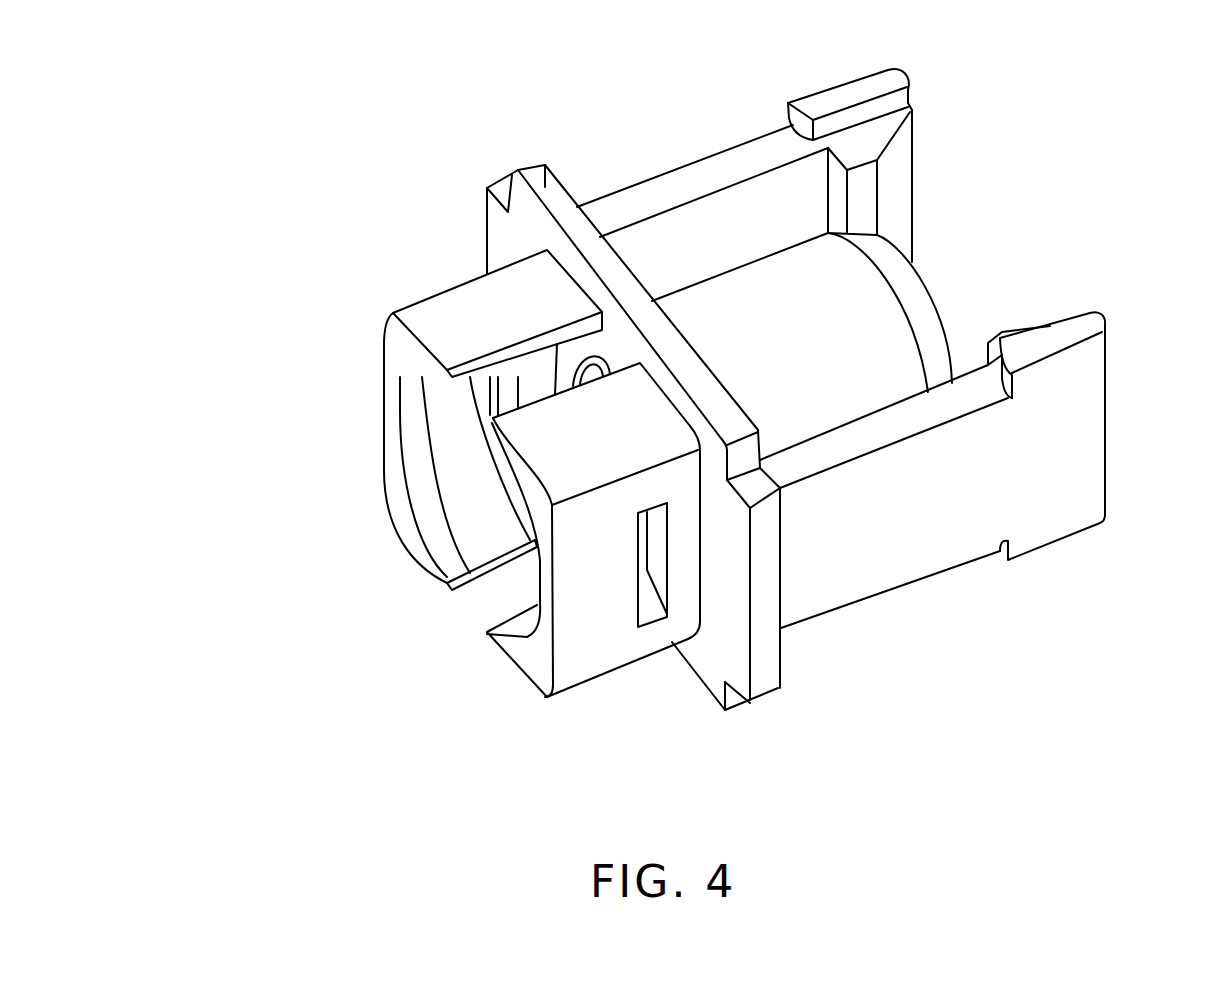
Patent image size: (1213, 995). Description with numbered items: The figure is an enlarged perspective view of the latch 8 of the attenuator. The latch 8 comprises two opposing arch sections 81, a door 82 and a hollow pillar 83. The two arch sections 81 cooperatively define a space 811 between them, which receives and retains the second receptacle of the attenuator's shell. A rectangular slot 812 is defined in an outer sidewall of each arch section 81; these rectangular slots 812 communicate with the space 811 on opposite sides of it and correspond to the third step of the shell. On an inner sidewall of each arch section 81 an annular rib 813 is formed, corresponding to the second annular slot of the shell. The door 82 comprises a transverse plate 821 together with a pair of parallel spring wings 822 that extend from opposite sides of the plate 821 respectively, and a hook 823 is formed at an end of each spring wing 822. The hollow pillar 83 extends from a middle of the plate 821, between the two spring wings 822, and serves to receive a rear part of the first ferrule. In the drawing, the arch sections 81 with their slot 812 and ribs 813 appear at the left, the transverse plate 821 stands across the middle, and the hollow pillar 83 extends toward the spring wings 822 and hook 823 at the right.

The latch 8 is at (318, 78).
The arch section 81 is at (448, 317).
The space 811 is at (482, 603).
The rectangular slot 812 is at (652, 570).
The annular rib 813 is at (490, 452).
The door 82 is at (637, 207).
The transverse plate 821 is at (763, 628).
The spring wing 822 is at (907, 530).
The hook 823 is at (1015, 327).
The hollow pillar 83 is at (882, 330).